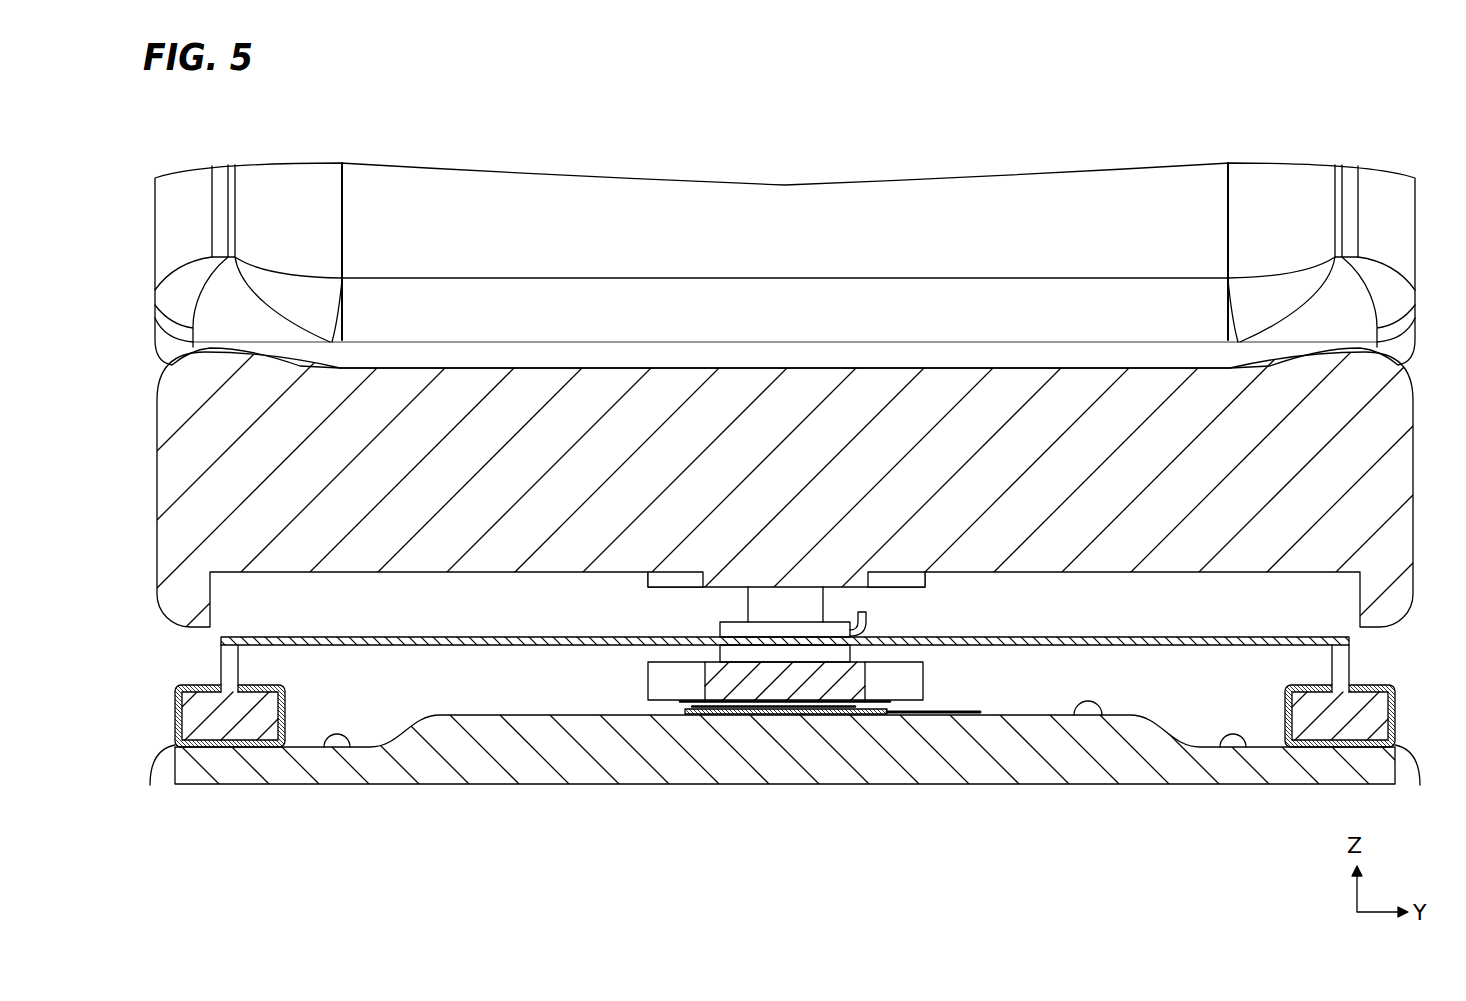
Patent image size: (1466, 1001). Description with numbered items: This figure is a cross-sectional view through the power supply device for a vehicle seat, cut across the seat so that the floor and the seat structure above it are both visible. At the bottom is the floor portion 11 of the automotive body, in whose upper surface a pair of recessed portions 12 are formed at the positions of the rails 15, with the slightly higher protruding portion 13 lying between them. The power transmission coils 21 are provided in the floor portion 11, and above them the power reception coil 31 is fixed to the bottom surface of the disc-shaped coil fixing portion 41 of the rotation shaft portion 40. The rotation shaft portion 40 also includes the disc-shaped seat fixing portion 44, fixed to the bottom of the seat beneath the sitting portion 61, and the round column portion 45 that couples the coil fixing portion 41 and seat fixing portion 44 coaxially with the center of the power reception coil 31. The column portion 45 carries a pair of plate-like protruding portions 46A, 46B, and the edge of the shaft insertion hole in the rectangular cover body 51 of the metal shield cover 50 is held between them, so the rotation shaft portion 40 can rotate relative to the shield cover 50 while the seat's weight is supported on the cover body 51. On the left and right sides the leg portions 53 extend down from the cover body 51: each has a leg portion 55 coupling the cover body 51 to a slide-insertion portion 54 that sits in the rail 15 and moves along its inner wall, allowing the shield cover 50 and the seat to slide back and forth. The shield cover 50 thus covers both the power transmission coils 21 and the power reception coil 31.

The floor portion 11 is at (832, 765).
The recessed portion 12 is at (1247, 745).
The protruding portion 13 is at (1100, 716).
The rail 15 is at (786, 778).
The power transmission coil 21 is at (765, 716).
The power reception coil 31 is at (807, 716).
The rotation shaft portion 40 is at (955, 678).
The coil fixing portion 41 is at (840, 683).
The seat fixing portion 44 is at (770, 578).
The column portion 45 is at (760, 601).
The protruding portion 46A is at (727, 625).
The protruding portion 46B is at (747, 655).
The shield cover 50 is at (734, 681).
The cover body 51 is at (567, 645).
The leg portion 53 is at (788, 687).
The slide-insertion portion 54 is at (1358, 715).
The leg portion 55 is at (1412, 686).
The sitting portion 61 is at (1338, 480).